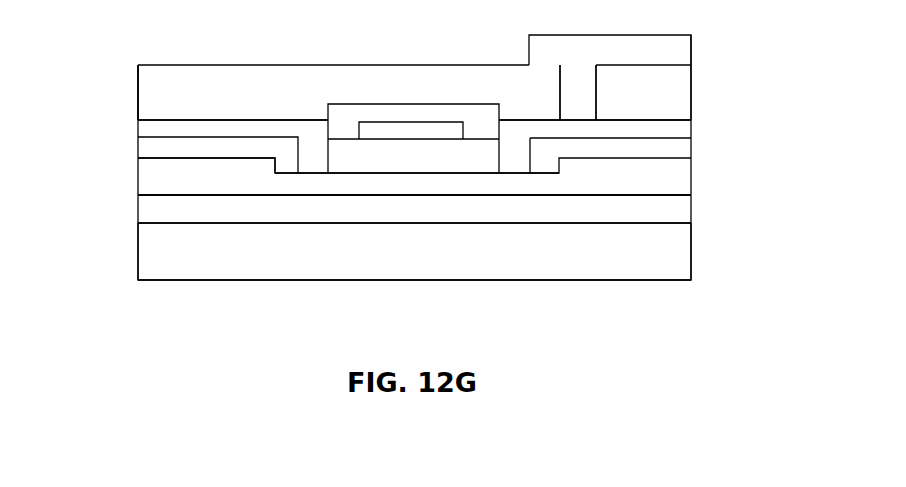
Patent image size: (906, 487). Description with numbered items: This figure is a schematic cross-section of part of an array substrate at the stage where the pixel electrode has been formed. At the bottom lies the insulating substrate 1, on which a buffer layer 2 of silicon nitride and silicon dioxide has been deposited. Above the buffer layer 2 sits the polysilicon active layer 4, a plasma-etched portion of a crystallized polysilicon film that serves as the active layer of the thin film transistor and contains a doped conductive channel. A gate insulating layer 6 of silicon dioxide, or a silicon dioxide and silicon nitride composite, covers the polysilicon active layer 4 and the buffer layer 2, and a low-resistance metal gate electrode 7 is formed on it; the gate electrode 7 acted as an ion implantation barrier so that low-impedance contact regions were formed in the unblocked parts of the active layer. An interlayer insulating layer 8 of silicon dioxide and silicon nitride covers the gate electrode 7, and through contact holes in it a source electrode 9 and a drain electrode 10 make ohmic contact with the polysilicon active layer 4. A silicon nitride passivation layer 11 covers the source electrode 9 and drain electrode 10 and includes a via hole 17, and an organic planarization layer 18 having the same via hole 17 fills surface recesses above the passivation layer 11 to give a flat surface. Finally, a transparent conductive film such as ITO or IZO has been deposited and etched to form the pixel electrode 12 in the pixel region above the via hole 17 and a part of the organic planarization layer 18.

The insulating substrate 1 is at (697, 261).
The buffer layer 2 is at (697, 211).
The polysilicon active layer 4 is at (269, 187).
The gate insulating layer 6 is at (344, 179).
The gate electrode 7 is at (413, 145).
The interlayer insulating layer 8 is at (132, 157).
The source electrode 9 is at (132, 125).
The drain electrode 10 is at (697, 133).
The passivation layer 11 is at (132, 104).
The pixel electrode 12 is at (697, 46).
The via hole 17 is at (581, 89).
The organic planarization layer 18 is at (132, 78).